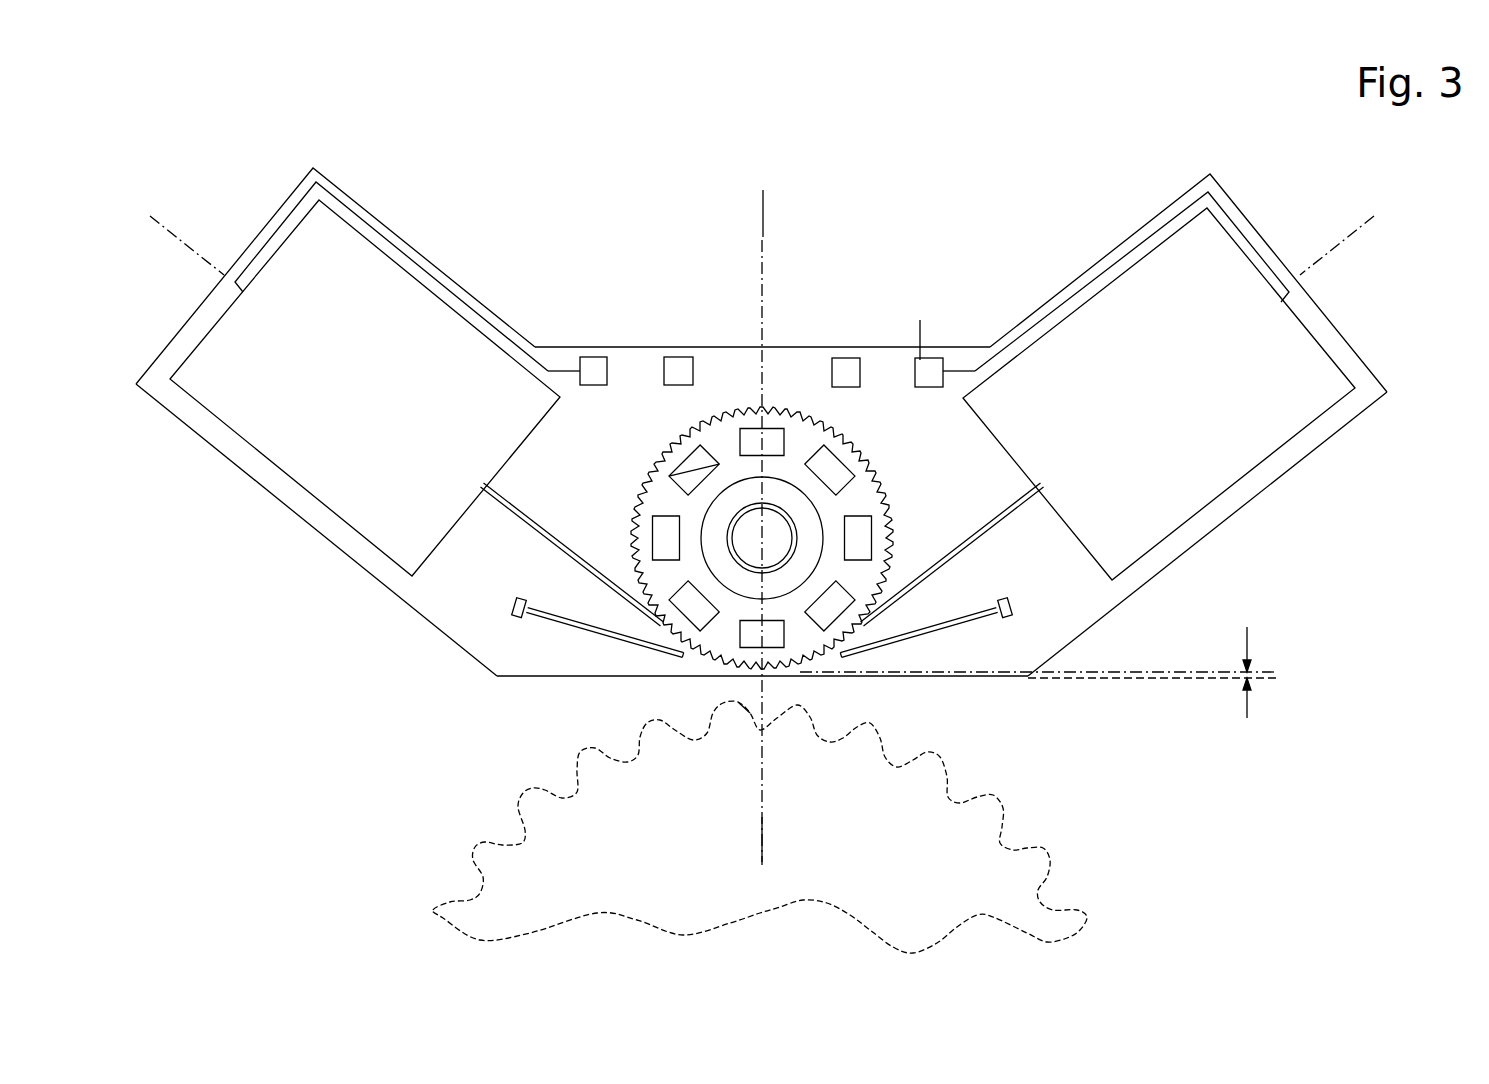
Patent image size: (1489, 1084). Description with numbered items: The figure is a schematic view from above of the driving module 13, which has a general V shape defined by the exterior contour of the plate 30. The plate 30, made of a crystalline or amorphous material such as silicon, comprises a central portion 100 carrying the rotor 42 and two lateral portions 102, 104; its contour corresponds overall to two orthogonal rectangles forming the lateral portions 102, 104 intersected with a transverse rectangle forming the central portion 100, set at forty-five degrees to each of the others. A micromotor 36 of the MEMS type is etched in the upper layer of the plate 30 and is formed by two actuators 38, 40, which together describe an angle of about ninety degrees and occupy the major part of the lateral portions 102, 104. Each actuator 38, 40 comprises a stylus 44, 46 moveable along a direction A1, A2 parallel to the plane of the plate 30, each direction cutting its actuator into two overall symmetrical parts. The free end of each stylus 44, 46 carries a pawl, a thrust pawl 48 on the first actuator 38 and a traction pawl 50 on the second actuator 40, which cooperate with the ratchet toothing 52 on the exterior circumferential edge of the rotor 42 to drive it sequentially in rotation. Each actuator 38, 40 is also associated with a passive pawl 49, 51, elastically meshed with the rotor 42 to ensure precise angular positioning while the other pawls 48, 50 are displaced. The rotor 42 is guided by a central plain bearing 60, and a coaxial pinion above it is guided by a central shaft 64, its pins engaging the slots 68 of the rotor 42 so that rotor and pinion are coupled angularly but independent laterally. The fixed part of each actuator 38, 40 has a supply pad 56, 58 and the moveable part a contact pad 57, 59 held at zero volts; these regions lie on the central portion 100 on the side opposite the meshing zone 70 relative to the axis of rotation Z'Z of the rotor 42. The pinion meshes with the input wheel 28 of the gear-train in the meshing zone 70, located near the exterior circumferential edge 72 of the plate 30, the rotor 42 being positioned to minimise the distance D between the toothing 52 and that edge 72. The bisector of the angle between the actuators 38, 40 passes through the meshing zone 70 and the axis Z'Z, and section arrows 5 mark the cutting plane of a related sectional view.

The driving module 13 is at (607, 215).
The central portion 100 is at (990, 336).
The lateral portion 102 is at (413, 238).
The lateral portion 104 is at (1160, 204).
The plate 30 is at (451, 660).
The micromotor 36 is at (494, 713).
The first actuator 38 is at (298, 470).
The second actuator 40 is at (1297, 402).
The direction A1 is at (163, 231).
The direction A2 is at (1360, 232).
The stylus 44 is at (505, 510).
The stylus 46 is at (1018, 525).
The thrust pawl 48 is at (634, 641).
The passive pawl 49 is at (680, 656).
The traction pawl 50 is at (893, 640).
The passive pawl 51 is at (823, 663).
The rotor 42 is at (789, 397).
The central plain bearing 60 is at (762, 538).
The central shaft 64 is at (743, 538).
The ratchet toothing 52 is at (668, 447).
The slots 68 is at (700, 430).
The supply pad 56 is at (588, 360).
The contact pad 57 is at (681, 360).
The contact pad 59 is at (832, 358).
The supply pad 58 is at (933, 370).
The axis of rotation Z'Z is at (922, 325).
The section line 5 is at (748, 213).
The exterior circumferential edge 72 is at (997, 680).
The distance D is at (1262, 672).
The input wheel 28 is at (1064, 868).
The meshing zone 70 is at (743, 706).